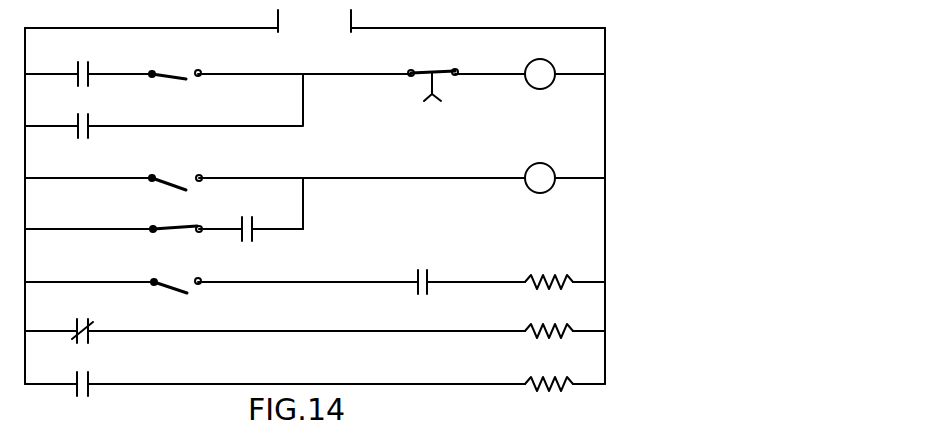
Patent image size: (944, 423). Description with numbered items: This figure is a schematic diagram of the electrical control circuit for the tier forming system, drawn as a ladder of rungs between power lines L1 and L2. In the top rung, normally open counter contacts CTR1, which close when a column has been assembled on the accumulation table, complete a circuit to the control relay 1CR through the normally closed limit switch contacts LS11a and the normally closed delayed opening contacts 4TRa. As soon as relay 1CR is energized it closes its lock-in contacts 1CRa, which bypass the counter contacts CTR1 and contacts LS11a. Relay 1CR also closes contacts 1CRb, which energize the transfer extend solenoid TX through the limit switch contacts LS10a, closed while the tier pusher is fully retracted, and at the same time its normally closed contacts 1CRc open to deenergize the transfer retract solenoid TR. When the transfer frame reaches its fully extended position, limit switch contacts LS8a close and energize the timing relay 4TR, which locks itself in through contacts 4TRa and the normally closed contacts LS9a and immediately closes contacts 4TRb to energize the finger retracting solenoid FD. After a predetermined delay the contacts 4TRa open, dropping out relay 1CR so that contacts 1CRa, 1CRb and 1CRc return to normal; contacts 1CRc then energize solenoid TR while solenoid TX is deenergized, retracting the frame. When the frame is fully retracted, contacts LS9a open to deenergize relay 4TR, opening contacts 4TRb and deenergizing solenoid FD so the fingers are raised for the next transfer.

The power line L1 is at (278, 20).
The power line L2 is at (353, 20).
The counter switch contacts CTR1 is at (83, 86).
The limit switch LS11 contacts LS11a is at (174, 71).
The delayed opening contacts of timing relay 4TR 4TRa is at (426, 70).
The control relay 1CR is at (529, 64).
The lock-in contacts of control relay 1CR 1CRa is at (83, 138).
The limit switch LS8 contacts LS8a is at (179, 175).
The timing relay 4TR is at (529, 166).
The limit switch LS9 contacts LS9a is at (172, 226).
The limit switch LS10 contacts LS10a is at (171, 277).
The contacts of control relay 1CR 1CRb is at (421, 268).
The transfer extend solenoid TX is at (546, 274).
The normally closed contacts of control relay 1CR 1CRc is at (82, 343).
The transfer retract solenoid TR is at (546, 327).
The contacts of timing relay 4TR 4TRb is at (83, 396).
The finger retracting solenoid FD is at (546, 379).